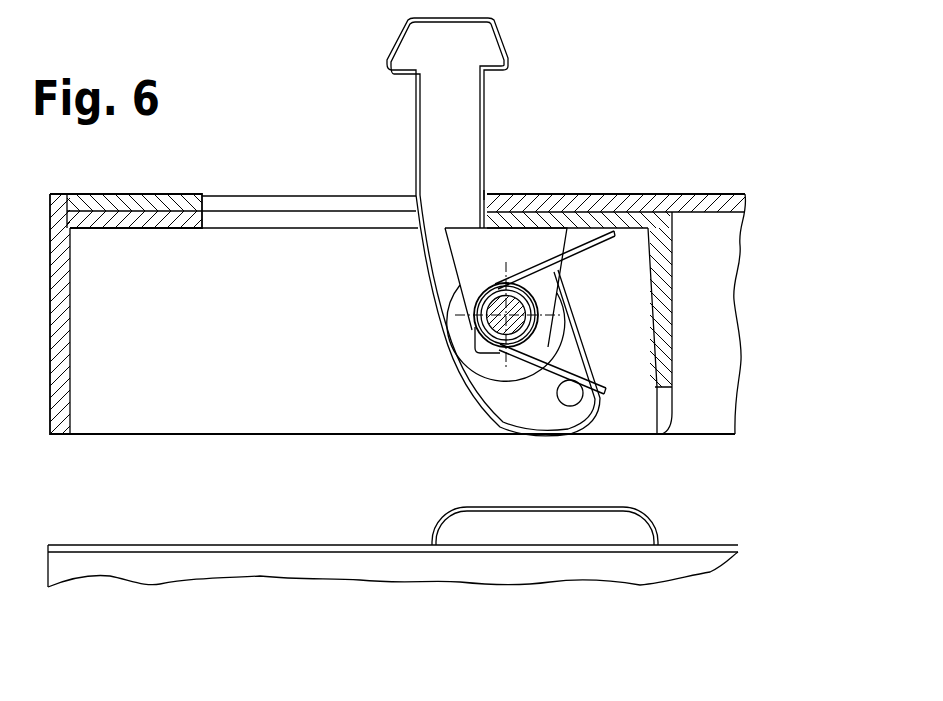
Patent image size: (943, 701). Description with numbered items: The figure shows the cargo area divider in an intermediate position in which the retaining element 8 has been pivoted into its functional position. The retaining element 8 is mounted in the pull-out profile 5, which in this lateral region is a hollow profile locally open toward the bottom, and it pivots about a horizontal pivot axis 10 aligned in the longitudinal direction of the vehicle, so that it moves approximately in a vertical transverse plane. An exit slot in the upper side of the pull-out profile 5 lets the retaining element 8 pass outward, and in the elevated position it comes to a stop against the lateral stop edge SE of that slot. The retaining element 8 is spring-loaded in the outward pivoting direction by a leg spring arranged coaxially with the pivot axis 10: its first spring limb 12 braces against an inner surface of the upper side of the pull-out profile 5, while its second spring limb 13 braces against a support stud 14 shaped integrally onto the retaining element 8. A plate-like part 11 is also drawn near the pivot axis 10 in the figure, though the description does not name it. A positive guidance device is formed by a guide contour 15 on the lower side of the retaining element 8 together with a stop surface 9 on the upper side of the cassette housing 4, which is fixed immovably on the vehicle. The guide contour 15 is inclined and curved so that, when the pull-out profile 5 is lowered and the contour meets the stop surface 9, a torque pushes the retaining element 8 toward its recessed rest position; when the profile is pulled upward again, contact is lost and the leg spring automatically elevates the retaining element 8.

The cassette housing 4 is at (240, 562).
The pull-out profile 5 is at (272, 196).
The retaining element 8 is at (472, 135).
The stop edge SE is at (486, 194).
The stop surface 9 is at (523, 535).
The pivot axis 10 is at (482, 335).
The catch plate 11 is at (475, 262).
The first spring limb 12 is at (582, 238).
The second spring limb 13 is at (604, 383).
The support stud 14 is at (572, 396).
The guide contour 15 is at (500, 430).